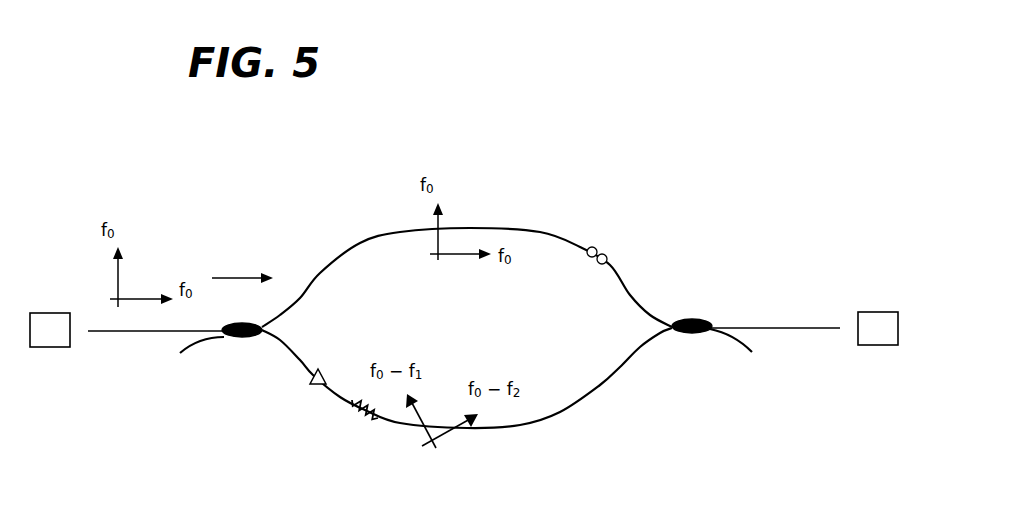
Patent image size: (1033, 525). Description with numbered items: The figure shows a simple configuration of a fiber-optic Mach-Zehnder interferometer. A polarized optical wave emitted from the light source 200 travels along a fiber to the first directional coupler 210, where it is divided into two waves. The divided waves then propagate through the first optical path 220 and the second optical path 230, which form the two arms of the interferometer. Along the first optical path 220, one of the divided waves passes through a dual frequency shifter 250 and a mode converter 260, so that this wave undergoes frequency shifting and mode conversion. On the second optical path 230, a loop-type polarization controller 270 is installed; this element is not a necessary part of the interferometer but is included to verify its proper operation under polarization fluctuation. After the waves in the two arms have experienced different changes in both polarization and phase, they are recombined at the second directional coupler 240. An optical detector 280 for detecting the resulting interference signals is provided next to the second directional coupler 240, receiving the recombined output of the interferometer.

The light source 200 is at (45, 349).
The first directional coupler 210 is at (226, 338).
The first optical path 220 is at (497, 450).
The second optical path 230 is at (497, 213).
The second directional coupler 240 is at (694, 318).
The dual frequency shifter 250 is at (316, 386).
The mode converter 260 is at (368, 418).
The loop-type polarization controller 270 is at (606, 254).
The optical detector 280 is at (880, 347).